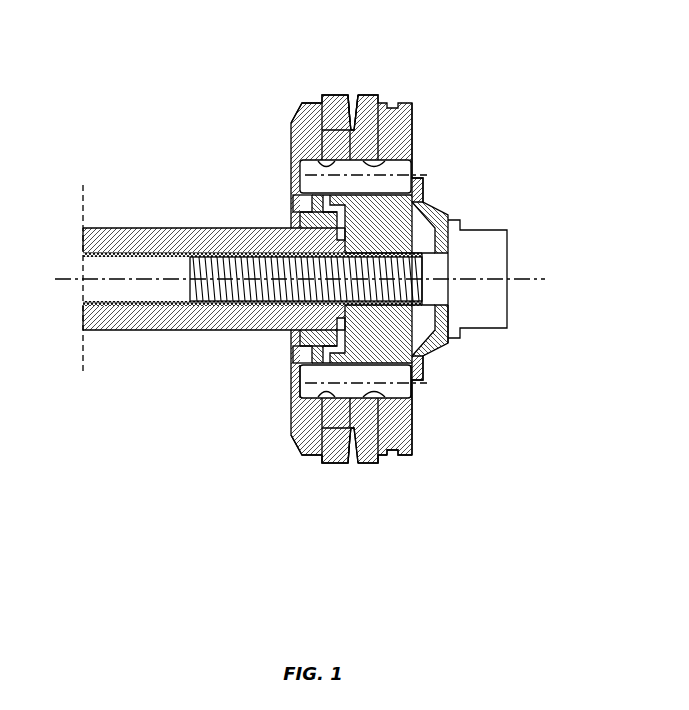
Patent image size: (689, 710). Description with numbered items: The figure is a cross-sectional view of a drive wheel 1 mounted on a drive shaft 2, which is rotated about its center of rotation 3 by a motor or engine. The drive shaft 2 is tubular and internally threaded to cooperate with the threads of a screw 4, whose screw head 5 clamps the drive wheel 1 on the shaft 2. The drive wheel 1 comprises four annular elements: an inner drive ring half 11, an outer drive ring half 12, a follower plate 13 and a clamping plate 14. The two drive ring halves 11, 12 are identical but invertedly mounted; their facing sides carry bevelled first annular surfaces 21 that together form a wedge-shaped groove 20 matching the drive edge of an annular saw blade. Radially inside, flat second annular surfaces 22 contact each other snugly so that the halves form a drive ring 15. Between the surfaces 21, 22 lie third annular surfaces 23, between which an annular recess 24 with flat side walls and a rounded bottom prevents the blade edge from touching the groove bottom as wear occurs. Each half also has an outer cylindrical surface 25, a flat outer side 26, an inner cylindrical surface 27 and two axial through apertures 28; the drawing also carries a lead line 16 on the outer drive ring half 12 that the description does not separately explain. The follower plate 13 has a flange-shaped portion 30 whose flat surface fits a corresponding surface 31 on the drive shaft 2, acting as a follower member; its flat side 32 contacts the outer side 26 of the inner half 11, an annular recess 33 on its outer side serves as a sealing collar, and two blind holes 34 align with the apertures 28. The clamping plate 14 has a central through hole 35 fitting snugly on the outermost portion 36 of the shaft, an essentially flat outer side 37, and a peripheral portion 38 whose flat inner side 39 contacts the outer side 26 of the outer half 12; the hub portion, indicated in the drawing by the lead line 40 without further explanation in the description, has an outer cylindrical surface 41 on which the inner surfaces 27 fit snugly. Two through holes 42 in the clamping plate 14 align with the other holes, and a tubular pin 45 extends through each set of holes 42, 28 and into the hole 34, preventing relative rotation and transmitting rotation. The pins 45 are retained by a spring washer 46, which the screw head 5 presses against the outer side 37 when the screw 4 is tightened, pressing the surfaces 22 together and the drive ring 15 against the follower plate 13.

The drive wheel 1 is at (401, 54).
The drive shaft 2 is at (196, 236).
The center of rotation 3 is at (62, 278).
The screw 4 is at (425, 272).
The screw head 5 is at (495, 272).
The first annular element (inner drive ring half) 11 is at (336, 466).
The second annular element (outer drive ring half) 12 is at (378, 465).
The third annular element (follower plate) 13 is at (300, 440).
The fourth annular element (clamping plate) 14 is at (402, 450).
The drive ring 15 is at (366, 466).
The housing body 16 is at (410, 112).
The wedge-shaped groove 20 is at (352, 112).
The first annular surface 21 is at (345, 100).
The second annular surface 22 is at (330, 150).
The third annular surface 23 is at (324, 106).
The annular recess 24 is at (352, 428).
The outer cylindrical surface 25 is at (325, 96).
The flat outer side 26 is at (328, 130).
The inner cylindrical surface 27 is at (390, 210).
The cylindrical through aperture 28 is at (318, 165).
The flange-shaped portion 30 is at (302, 204).
The surface on the drive shaft 31 is at (326, 200).
The side of the follower plate 32 is at (326, 462).
The annular recess 33 is at (300, 357).
The hole 34 is at (300, 378).
The central cylindrical through hole 35 is at (420, 288).
The outermost portion of the drive shaft 36 is at (432, 308).
The outer side of the clamping plate 37 is at (405, 430).
The peripheral portion 38 is at (405, 410).
The inner side 39 is at (394, 462).
The flange 40 is at (445, 334).
The outer cylindrical surface of the hub portion 41 is at (430, 376).
The cylindrical through hole 42 is at (425, 187).
The tubular pin 45 is at (300, 181).
The spring washer 46 is at (450, 212).